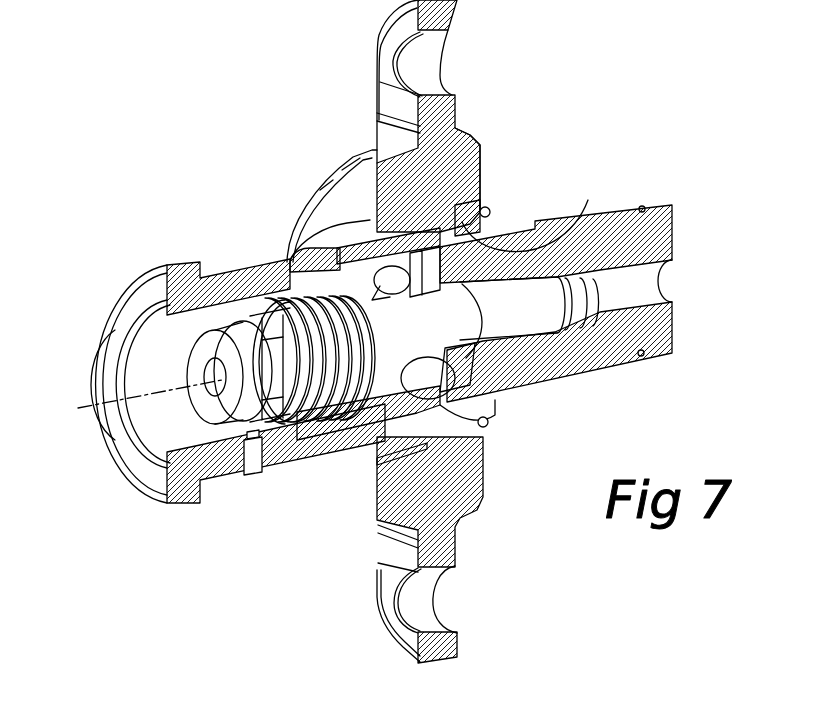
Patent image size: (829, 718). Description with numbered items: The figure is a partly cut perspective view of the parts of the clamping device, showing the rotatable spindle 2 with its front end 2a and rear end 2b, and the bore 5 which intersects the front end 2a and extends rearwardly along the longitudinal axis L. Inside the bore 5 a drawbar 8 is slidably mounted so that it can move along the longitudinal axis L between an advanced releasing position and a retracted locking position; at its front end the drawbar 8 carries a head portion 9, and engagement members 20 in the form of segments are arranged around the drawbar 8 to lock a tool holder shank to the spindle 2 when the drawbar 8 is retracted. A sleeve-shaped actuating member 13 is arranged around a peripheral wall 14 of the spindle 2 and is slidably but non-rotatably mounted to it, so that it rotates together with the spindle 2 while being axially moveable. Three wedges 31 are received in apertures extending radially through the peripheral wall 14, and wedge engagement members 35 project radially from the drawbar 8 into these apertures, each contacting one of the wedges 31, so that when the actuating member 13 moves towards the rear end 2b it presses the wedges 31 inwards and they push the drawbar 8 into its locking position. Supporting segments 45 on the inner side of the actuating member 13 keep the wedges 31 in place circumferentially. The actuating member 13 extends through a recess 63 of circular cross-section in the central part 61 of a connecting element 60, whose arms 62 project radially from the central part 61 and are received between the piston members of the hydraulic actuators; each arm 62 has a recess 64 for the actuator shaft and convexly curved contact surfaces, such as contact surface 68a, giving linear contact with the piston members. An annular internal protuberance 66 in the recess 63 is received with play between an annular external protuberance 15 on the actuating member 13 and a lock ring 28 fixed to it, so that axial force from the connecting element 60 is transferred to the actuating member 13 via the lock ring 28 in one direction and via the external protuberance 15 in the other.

The spindle 2 is at (222, 285).
The front end 2a is at (162, 248).
The rear end 2b is at (650, 190).
The bore 5 is at (198, 437).
The drawbar 8 is at (385, 383).
The head portion 9 is at (250, 343).
The actuating member 13 is at (348, 247).
The peripheral wall 14 is at (317, 275).
The external protuberance 15 is at (422, 217).
The engagement members 20 is at (283, 385).
The lock ring 28 is at (490, 210).
The wedges 31 is at (393, 284).
The wedge engagement members 35 is at (423, 288).
The supporting segments 45 is at (486, 416).
The connecting element 60 is at (314, 167).
The central part 61 is at (480, 158).
The arms 62 is at (450, 110).
The recess 63 is at (553, 265).
The recess 64 is at (408, 67).
The internal protuberance 66 is at (462, 210).
The contact surface 68a is at (388, 50).
The longitudinal axis L is at (134, 403).